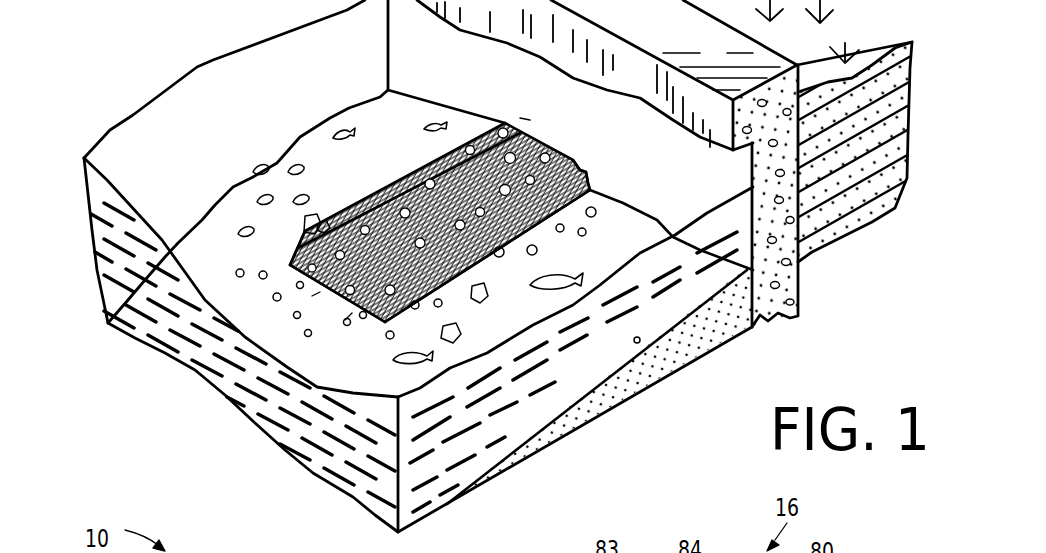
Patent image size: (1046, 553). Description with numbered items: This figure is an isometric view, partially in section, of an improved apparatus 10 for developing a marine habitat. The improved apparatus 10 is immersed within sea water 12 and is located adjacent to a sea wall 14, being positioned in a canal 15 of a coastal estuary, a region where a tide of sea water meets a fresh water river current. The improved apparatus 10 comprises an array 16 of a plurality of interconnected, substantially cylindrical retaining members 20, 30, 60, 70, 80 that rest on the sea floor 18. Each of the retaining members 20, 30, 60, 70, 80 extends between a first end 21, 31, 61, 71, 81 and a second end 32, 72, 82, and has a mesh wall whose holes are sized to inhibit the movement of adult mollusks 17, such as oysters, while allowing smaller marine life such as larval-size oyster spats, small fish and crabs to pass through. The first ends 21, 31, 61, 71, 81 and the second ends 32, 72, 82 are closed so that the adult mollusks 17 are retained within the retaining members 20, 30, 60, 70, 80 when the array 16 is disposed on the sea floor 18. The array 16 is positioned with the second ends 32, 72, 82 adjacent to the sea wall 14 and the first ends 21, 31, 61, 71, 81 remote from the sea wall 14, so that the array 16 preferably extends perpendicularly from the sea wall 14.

The improved apparatus 10 is at (188, 58).
The sea water 12 is at (157, 167).
The sea wall 14 is at (797, 300).
The canal 15 is at (98, 283).
The array 16 is at (470, 92).
The adult mollusks 17 is at (430, 410).
The sea floor 18 is at (603, 337).
The retaining member 20 is at (340, 305).
The first end 21 is at (345, 320).
The retaining member 30 is at (553, 237).
The first end 31 is at (387, 315).
The second end 32 is at (625, 201).
The retaining member 60 is at (300, 266).
The first end 61 is at (307, 272).
The retaining member 70 is at (445, 156).
The first end 71 is at (328, 212).
The second end 72 is at (528, 123).
The retaining member 80 is at (540, 133).
The first end 81 is at (312, 296).
The second end 82 is at (578, 162).